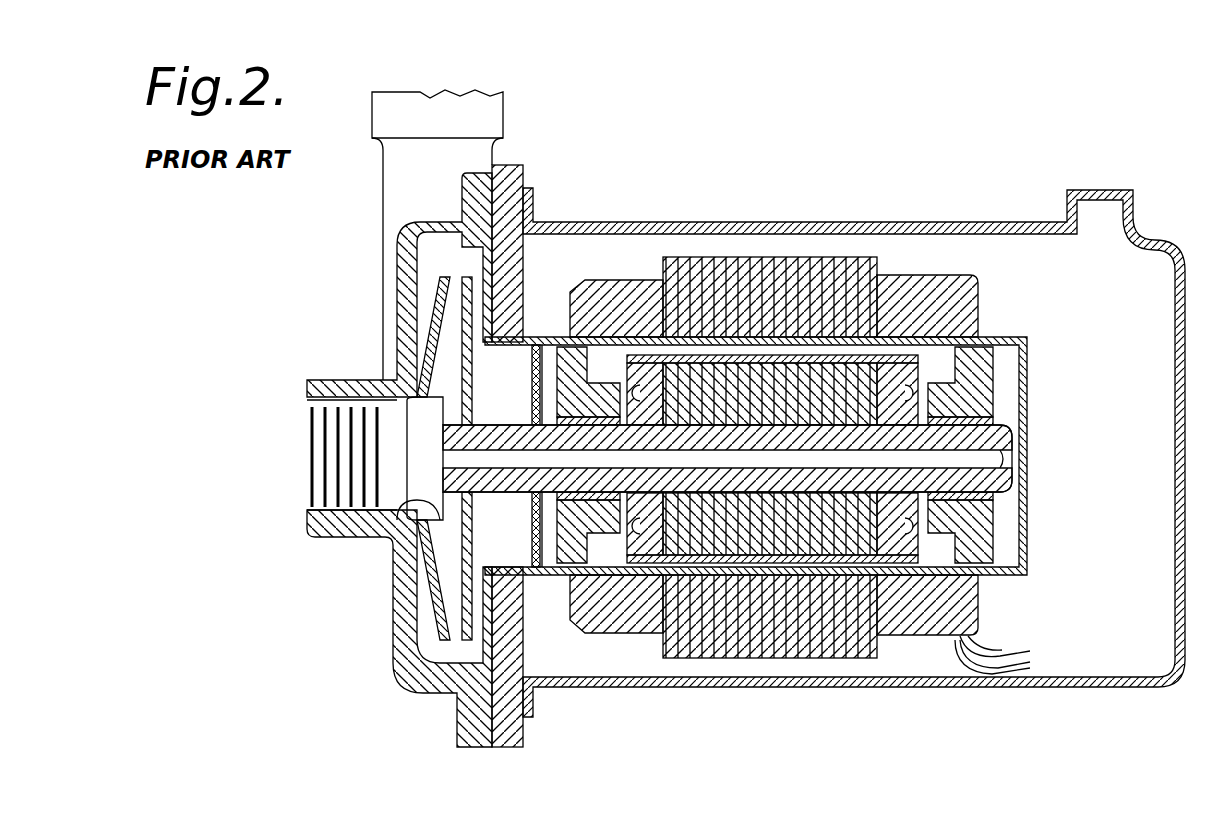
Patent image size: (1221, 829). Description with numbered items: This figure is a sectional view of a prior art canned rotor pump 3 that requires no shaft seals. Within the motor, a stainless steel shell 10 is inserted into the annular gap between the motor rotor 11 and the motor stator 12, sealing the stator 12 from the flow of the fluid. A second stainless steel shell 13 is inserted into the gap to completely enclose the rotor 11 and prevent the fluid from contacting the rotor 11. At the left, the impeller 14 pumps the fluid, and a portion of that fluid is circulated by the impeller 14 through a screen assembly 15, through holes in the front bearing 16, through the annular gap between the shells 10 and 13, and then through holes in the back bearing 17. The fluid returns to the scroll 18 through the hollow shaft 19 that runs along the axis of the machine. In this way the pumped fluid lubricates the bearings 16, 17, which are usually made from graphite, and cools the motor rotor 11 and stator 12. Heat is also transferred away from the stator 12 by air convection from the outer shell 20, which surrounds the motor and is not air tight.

The pump unit 3 is at (985, 748).
The stainless steel shell 10 is at (1003, 337).
The motor rotor 11 is at (785, 403).
The motor stator 12 is at (878, 265).
The stainless steel shell 13 is at (920, 370).
The impeller 14 is at (400, 505).
The screen assembly 15 is at (527, 523).
The front bearing 16 is at (568, 360).
The back bearing 17 is at (990, 538).
The scroll 18 is at (410, 277).
The hollow shaft 19 is at (443, 440).
The outer shell 20 is at (745, 222).